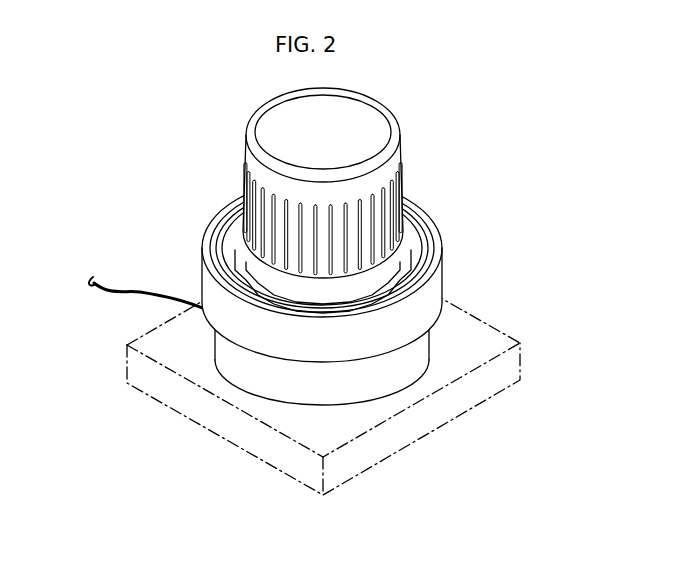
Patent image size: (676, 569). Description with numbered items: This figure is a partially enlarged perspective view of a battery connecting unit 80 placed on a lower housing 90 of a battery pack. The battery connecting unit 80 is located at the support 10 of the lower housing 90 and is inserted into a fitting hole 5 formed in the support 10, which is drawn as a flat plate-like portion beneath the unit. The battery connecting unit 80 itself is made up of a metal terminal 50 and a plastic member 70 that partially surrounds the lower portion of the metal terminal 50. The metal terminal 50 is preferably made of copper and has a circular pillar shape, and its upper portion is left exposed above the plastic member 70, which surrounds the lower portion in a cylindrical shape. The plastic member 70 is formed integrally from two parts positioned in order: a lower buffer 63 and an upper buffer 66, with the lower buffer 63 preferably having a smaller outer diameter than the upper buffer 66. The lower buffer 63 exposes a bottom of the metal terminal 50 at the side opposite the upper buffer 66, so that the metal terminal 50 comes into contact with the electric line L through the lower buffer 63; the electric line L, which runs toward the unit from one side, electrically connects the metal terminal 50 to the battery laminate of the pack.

The fitting hole 5 is at (283, 400).
The support 10 is at (286, 363).
The lower housing 90 is at (173, 392).
The metal terminal 50 is at (510, 265).
The lower buffer 63 is at (317, 391).
The upper buffer 66 is at (387, 332).
The plastic member 70 is at (356, 313).
The battery connecting unit 80 is at (380, 287).
The electric line L is at (142, 292).